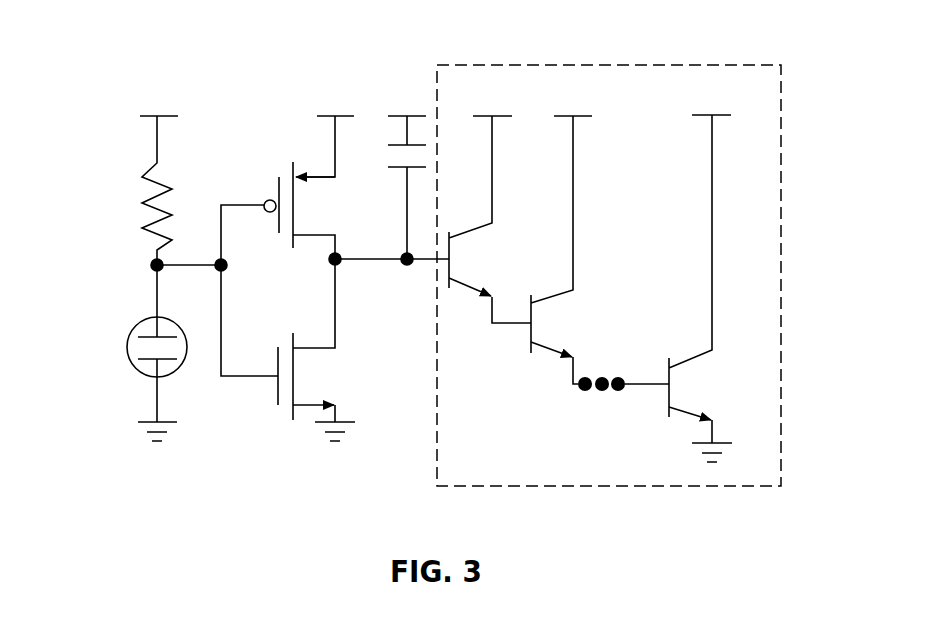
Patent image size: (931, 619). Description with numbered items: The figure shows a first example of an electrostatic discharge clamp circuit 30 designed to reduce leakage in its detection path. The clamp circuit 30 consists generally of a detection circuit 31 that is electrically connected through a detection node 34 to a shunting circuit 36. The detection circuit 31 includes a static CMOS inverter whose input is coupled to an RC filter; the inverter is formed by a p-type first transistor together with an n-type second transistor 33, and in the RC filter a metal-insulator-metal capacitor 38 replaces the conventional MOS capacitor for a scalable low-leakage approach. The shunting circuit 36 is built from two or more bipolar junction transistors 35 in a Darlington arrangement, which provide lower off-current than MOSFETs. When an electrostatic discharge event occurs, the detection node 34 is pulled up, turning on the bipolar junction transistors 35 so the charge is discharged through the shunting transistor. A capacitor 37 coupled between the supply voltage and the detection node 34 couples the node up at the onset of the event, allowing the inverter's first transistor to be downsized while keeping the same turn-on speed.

The clamp circuit 30 is at (108, 103).
The detection circuit 31 is at (278, 224).
The second transistor 33 is at (278, 394).
The detection node 34 is at (340, 265).
The bipolar junction transistors 35 is at (480, 251).
The shunting circuit 36 is at (781, 177).
The capacitor 37 is at (400, 168).
The metal-insulator-metal capacitor 38 is at (133, 330).